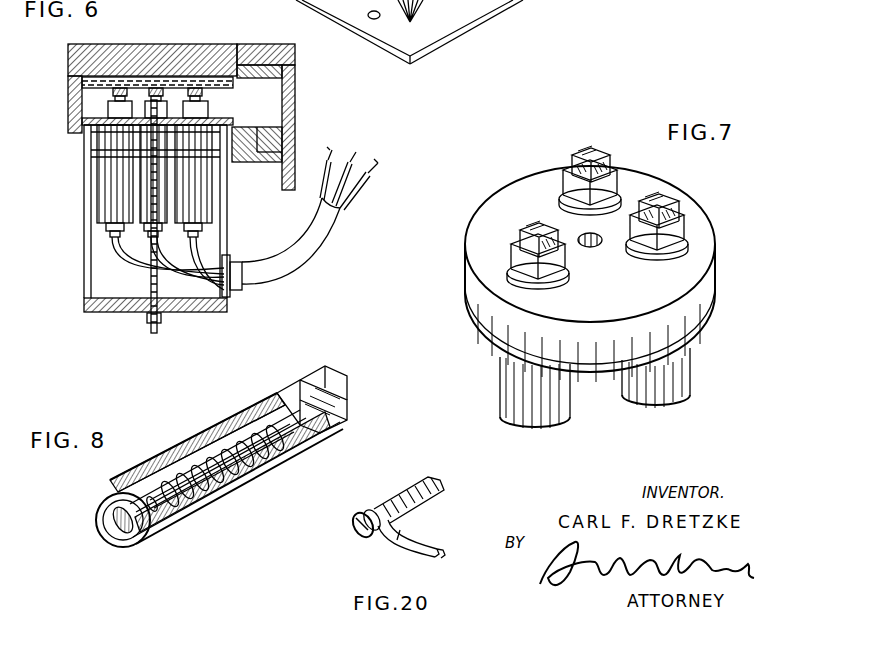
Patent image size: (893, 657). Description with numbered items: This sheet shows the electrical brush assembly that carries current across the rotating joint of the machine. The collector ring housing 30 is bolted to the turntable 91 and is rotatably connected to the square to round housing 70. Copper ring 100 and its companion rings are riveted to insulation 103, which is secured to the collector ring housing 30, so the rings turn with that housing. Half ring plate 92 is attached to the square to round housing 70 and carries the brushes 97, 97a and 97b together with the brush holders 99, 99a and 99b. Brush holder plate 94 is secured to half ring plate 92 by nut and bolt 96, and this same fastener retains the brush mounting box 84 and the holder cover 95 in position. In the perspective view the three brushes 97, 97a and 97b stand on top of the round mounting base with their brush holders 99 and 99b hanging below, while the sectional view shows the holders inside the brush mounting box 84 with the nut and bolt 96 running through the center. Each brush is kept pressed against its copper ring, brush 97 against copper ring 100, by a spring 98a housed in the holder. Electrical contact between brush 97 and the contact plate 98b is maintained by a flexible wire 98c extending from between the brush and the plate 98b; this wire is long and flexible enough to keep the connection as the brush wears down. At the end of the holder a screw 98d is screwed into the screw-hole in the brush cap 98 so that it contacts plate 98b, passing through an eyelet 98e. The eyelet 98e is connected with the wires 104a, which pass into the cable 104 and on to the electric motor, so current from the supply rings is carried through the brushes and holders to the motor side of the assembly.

In FIG. 6, the collector ring housing 30 is at (100, 90).
In FIG. 6, the square to round housing 70 is at (258, 164).
In FIG. 6, the brush mounting box 84 is at (84, 251).
In FIG. 6, the turntable 91 is at (297, 82).
In FIG. 6, the half ring plate 92 is at (86, 120).
In FIG. 6, the brush holder plate 94 is at (97, 142).
In FIG. 7, the brush holder plate 94 is at (486, 287).
In FIG. 6, the holder cover 95 is at (109, 312).
In FIG. 6, the nut and bolt 96 is at (166, 100).
In FIG. 7, the brush 97 is at (529, 227).
In FIG. 8, the brush 97 is at (332, 391).
In FIG. 7, the brush 97a is at (593, 148).
In FIG. 7, the brush 97b is at (673, 200).
In FIG. 8, the brush cap 98 is at (102, 523).
In FIG. 8, the spring 98a is at (207, 441).
In FIG. 8, the contact plate 98b is at (133, 482).
In FIG. 8, the flexible wire 98c is at (154, 502).
In FIG. 20, the screw 98d is at (360, 529).
In FIG. 20, the eyelet 98e is at (370, 508).
In FIG. 6, the brush holder 99 is at (103, 197).
In FIG. 7, the brush holder 99 is at (500, 400).
In FIG. 8, the brush holder 99 is at (207, 436).
In FIG. 6, the brush holder 99a is at (137, 282).
In FIG. 6, the brush holder 99b is at (210, 205).
In FIG. 7, the brush holder 99b is at (686, 373).
In FIG. 6, the copper ring 100 is at (108, 107).
In FIG. 6, the insulation 103 is at (227, 83).
In FIG. 6, the cable 104 is at (324, 250).
In FIG. 6, the wires 104a is at (228, 300).
In FIG. 20, the wires 104a is at (403, 549).